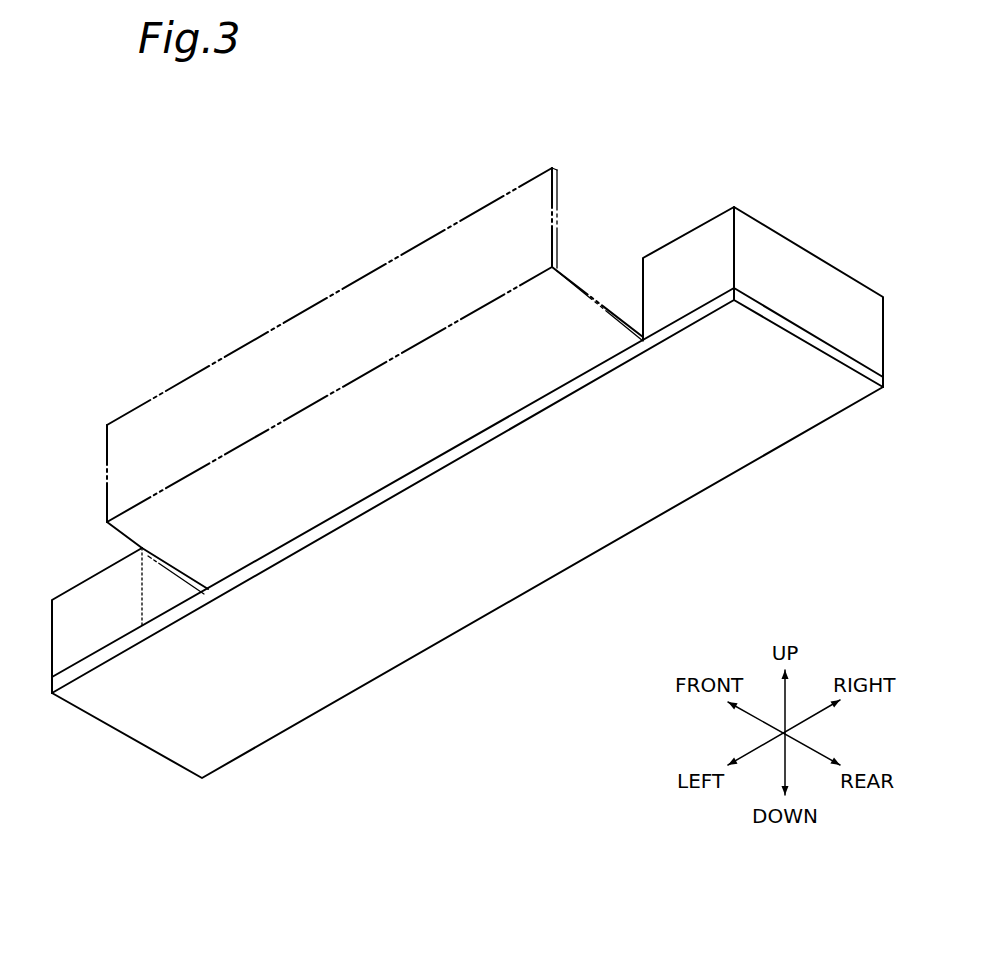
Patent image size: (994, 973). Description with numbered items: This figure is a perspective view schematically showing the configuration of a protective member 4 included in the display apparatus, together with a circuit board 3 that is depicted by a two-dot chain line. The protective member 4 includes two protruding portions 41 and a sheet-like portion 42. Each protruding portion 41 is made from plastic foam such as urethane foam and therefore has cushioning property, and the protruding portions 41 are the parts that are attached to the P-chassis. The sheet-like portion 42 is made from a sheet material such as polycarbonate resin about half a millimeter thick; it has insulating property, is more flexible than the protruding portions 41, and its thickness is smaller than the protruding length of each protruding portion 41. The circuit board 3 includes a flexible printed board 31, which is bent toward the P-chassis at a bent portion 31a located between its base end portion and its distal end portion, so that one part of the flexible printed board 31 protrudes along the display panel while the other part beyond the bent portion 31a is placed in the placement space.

The circuit board 3 is at (201, 396).
The flexible printed board 31 is at (280, 367).
The bent portion 31a is at (392, 358).
The protective member 4 is at (590, 158).
The protruding portion 41 is at (83, 597).
The sheet-like portion 42 is at (338, 677).